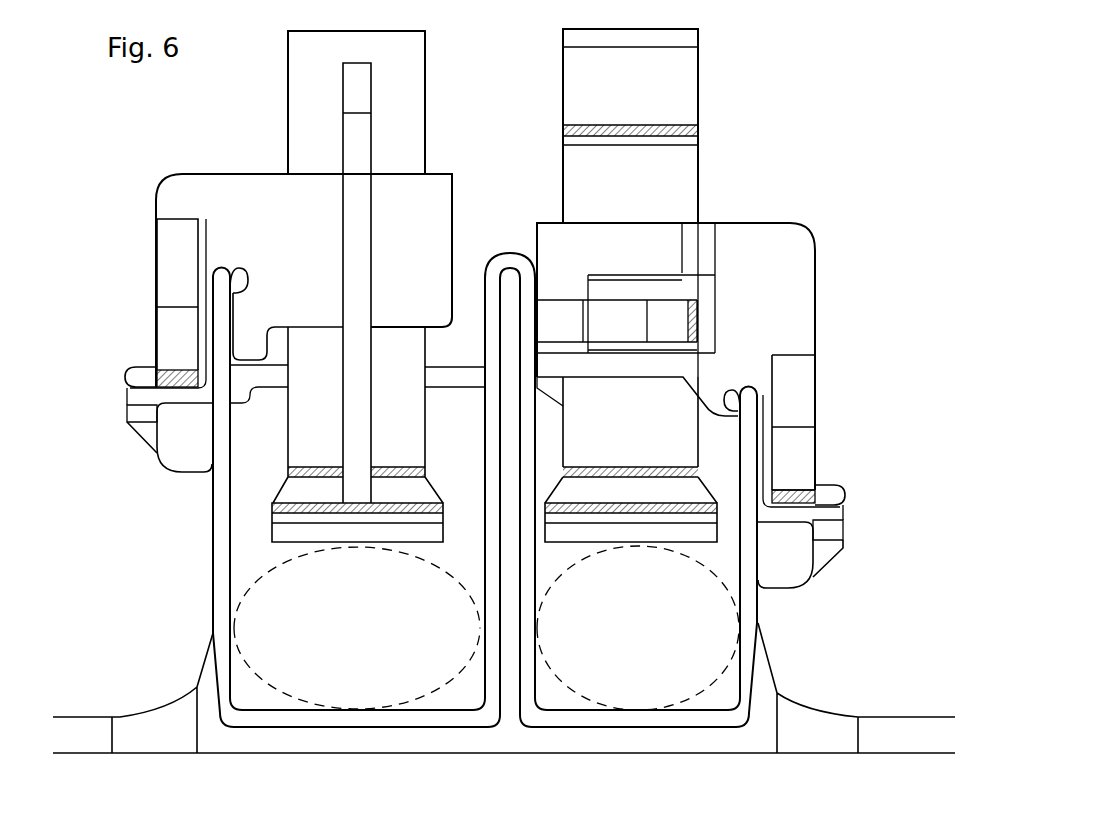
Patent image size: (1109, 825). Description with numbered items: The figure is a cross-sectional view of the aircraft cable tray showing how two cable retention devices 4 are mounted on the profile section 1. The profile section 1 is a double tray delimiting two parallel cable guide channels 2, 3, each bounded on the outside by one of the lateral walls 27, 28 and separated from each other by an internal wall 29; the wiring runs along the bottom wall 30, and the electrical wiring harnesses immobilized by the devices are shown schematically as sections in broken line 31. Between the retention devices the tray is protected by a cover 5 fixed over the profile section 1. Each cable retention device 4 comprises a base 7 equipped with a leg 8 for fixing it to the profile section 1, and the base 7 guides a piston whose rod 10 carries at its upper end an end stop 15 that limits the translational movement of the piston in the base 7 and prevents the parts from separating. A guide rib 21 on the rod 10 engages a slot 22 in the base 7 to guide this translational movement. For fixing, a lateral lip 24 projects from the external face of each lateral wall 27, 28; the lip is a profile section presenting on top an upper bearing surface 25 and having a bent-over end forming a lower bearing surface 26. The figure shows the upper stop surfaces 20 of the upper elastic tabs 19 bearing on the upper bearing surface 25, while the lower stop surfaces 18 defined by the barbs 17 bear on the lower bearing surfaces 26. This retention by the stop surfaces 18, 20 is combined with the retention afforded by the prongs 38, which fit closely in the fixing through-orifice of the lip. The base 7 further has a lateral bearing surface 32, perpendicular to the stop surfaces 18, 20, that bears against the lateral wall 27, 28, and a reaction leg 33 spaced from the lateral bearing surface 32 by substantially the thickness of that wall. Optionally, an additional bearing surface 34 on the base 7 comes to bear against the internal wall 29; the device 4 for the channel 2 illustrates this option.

The profile section 1 is at (527, 165).
The cable guide channel 2 is at (722, 690).
The cable guide channel 3 is at (262, 690).
The cable retention device 4 is at (150, 188).
The cover 5 is at (460, 365).
The base 7 is at (275, 190).
The leg 8 is at (150, 285).
The rod 10 is at (700, 160).
The end stop 15 is at (687, 70).
The barbs 17 is at (140, 455).
The lower stop surfaces 18 is at (133, 393).
The upper elastic tabs 19 is at (170, 340).
The upper stop surfaces 20 is at (190, 393).
The guide rib 21 is at (360, 165).
The slot 22 is at (340, 275).
The lateral lip 24 is at (134, 415).
The upper bearing surface 25 is at (148, 380).
The lower bearing surface 26 is at (140, 432).
The lateral wall 27 is at (760, 618).
The lateral wall 28 is at (212, 577).
The internal wall 29 is at (490, 480).
The bottom wall 30 is at (430, 707).
The electrical wiring harness sections 31 is at (278, 560).
The lateral bearing surface 32 is at (205, 240).
The reaction leg 33 is at (240, 347).
The additional bearing surface 34 is at (535, 250).
The prongs 38 is at (190, 460).